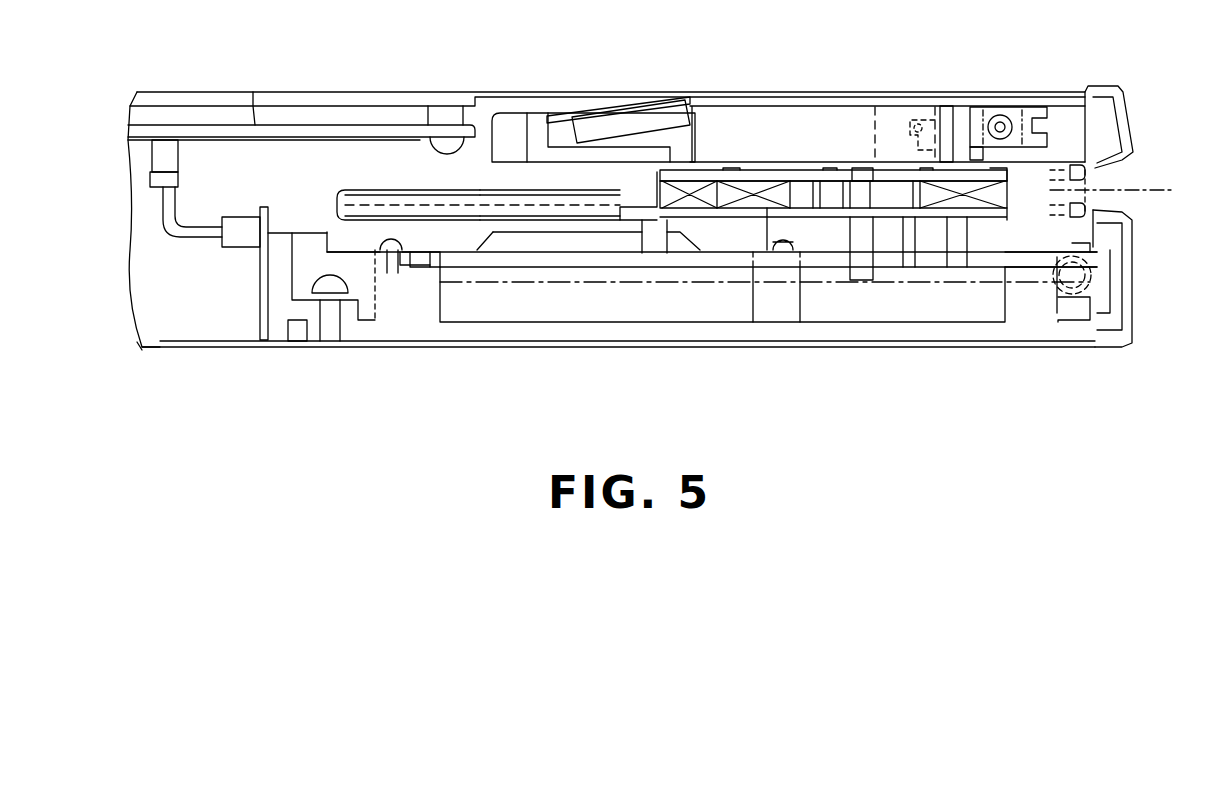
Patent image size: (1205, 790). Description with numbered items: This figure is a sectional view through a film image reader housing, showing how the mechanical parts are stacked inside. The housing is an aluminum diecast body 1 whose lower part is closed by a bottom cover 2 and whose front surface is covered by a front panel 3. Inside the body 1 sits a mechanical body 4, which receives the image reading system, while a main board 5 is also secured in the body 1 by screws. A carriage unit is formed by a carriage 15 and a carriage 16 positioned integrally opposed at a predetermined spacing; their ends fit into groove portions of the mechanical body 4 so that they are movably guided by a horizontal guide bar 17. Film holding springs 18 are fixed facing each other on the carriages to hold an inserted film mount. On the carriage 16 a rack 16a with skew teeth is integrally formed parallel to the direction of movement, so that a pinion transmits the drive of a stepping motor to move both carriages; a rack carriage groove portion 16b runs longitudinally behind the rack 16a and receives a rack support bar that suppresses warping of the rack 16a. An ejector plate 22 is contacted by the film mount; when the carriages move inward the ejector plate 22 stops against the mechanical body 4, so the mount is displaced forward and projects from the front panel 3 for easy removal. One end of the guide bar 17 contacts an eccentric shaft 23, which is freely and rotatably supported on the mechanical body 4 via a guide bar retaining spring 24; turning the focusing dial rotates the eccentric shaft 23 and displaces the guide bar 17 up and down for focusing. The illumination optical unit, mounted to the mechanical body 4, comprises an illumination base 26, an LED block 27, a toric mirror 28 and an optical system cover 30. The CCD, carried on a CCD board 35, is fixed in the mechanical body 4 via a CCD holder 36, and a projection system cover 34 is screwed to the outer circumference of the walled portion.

The body 1 is at (338, 98).
The bottom cover 2 is at (160, 350).
The front panel 3 is at (1133, 307).
The mechanical body 4 is at (410, 300).
The main board 5 is at (248, 100).
The carriage 15 is at (952, 160).
The carriage 16 is at (907, 222).
The rack 16a is at (482, 190).
The rack carriage groove portion 16b is at (410, 192).
The guide bar 17 is at (1003, 258).
The film holding spring 18 is at (785, 195).
The ejector plate 22 is at (655, 233).
The eccentric shaft 23 is at (1068, 266).
The guide bar retaining spring 24 is at (1127, 223).
The illumination base 26 is at (561, 115).
The LED block 27 is at (667, 123).
The toric mirror 28 is at (1005, 108).
The optical system cover 30 is at (525, 160).
The projection system cover 34 is at (543, 245).
The CCD board 35 is at (258, 290).
The CCD holder 36 is at (296, 310).